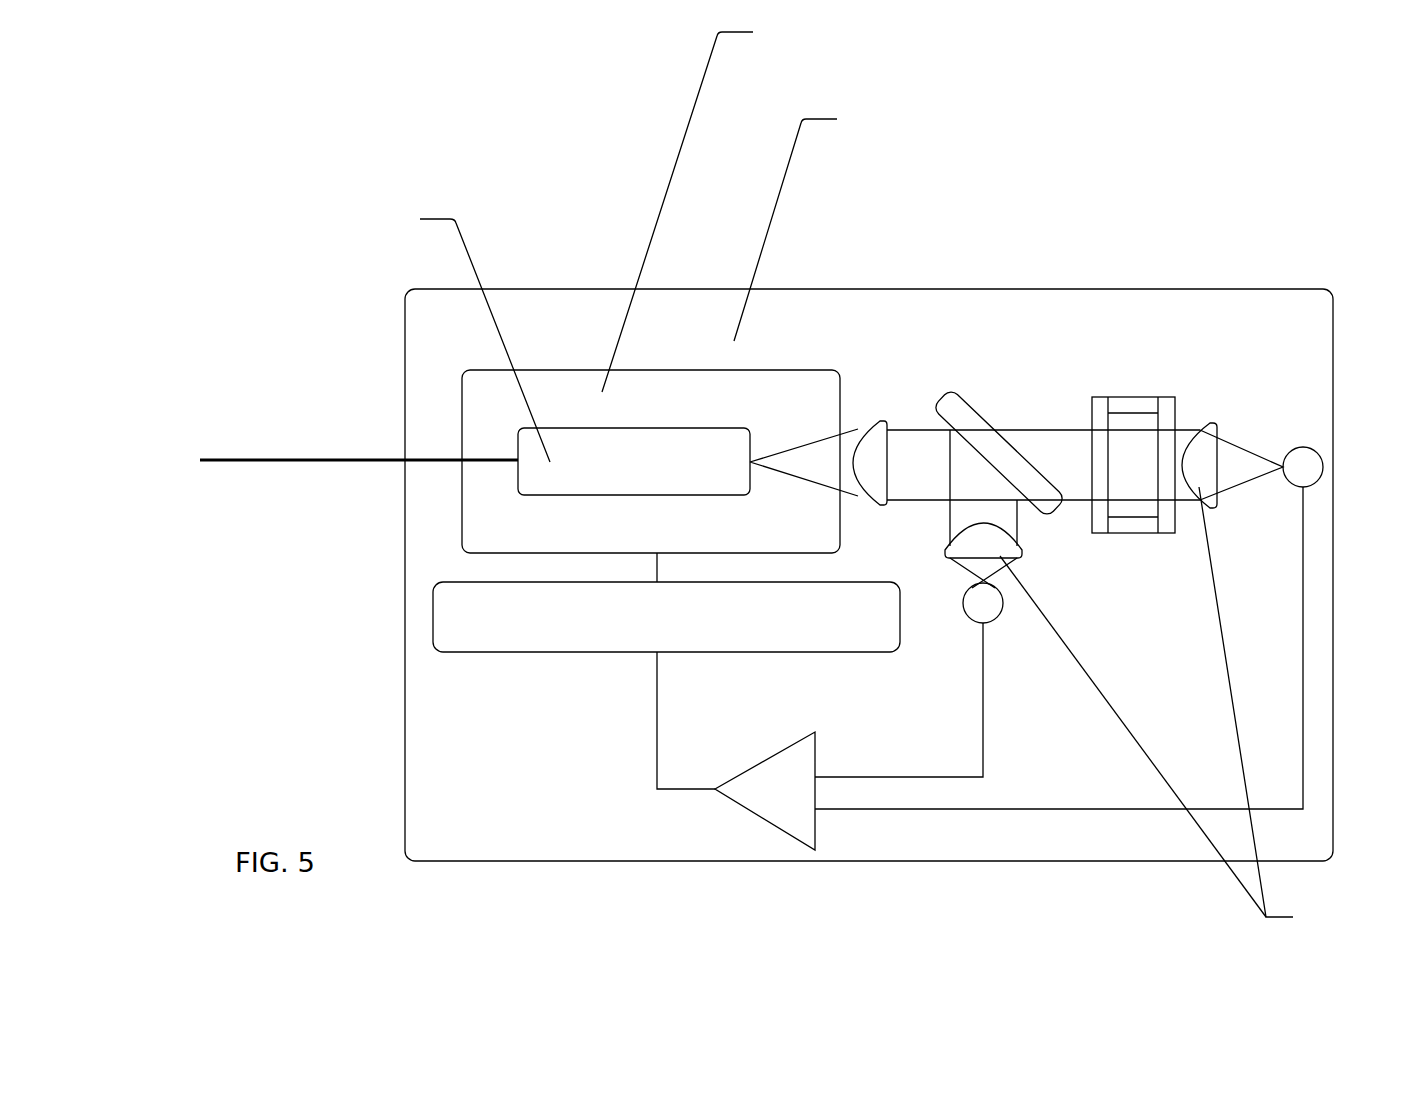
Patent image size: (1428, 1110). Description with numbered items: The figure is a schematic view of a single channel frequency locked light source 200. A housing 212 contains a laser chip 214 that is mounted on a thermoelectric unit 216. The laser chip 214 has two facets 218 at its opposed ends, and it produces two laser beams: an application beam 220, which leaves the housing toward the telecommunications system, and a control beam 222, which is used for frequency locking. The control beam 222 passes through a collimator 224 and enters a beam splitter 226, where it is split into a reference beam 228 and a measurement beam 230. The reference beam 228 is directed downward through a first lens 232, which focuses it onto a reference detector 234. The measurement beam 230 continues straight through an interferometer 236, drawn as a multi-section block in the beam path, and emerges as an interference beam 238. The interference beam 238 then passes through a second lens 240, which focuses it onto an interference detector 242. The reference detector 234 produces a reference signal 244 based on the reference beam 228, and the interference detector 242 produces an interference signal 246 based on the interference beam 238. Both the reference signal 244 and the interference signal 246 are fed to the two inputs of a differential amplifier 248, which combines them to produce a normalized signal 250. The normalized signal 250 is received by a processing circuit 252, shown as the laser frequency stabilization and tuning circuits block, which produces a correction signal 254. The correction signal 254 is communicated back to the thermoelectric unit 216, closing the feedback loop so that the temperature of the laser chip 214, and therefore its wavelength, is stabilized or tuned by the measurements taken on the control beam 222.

The single channel frequency locked light source 200 is at (335, 158).
The housing 212 is at (405, 553).
The laser chip 214 is at (655, 477).
The thermoelectric unit 216 is at (808, 416).
The facets 218 is at (518, 478).
The application beam 220 is at (331, 463).
The control beam 222 is at (852, 423).
The collimator 224 is at (882, 425).
The beam splitter 226 is at (1048, 522).
The reference beam 228 is at (938, 467).
The measurement beam 230 is at (1058, 422).
The first lens 232 is at (1018, 557).
The reference detector 234 is at (965, 593).
The interferometer 236 is at (1132, 533).
The interference beam 238 is at (1193, 422).
The second lens 240 is at (1200, 486).
The interference detector 242 is at (1323, 470).
The reference signal 244 is at (983, 757).
The interference signal 246 is at (988, 809).
The differential amplifier 248 is at (778, 802).
The normalized signal 250 is at (657, 726).
The processing circuit 252 is at (433, 617).
The correction signal 254 is at (657, 565).